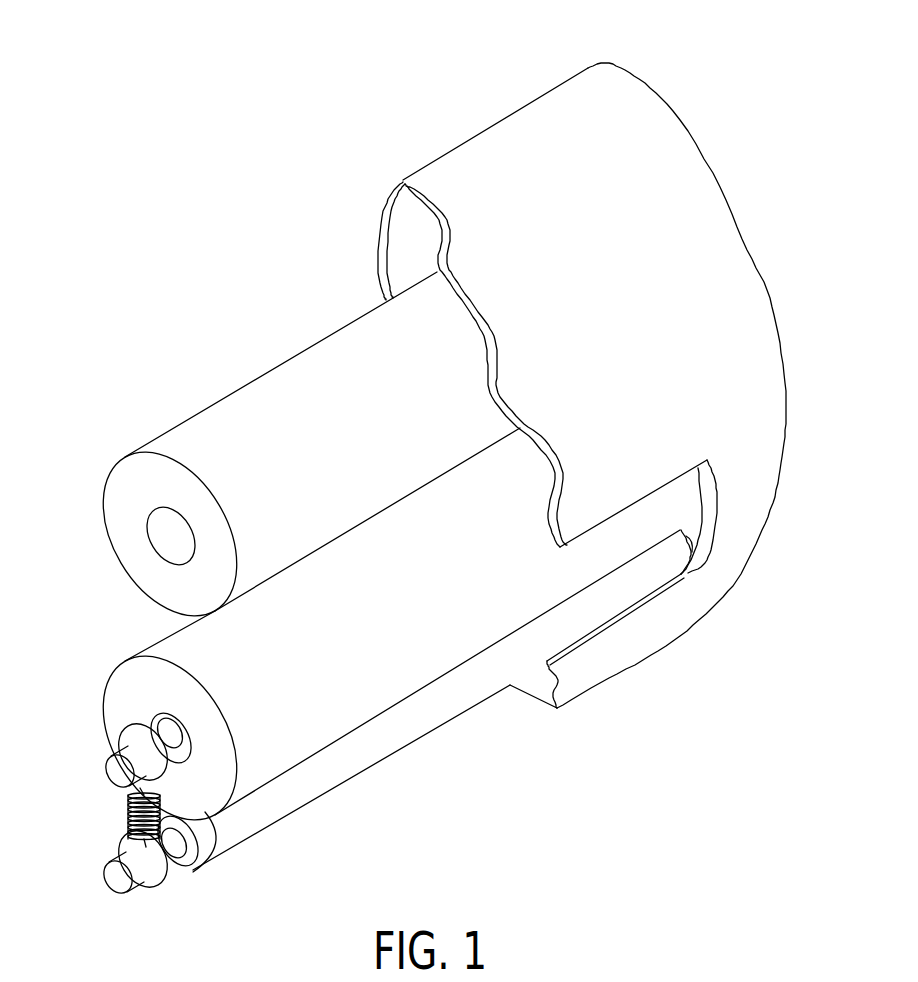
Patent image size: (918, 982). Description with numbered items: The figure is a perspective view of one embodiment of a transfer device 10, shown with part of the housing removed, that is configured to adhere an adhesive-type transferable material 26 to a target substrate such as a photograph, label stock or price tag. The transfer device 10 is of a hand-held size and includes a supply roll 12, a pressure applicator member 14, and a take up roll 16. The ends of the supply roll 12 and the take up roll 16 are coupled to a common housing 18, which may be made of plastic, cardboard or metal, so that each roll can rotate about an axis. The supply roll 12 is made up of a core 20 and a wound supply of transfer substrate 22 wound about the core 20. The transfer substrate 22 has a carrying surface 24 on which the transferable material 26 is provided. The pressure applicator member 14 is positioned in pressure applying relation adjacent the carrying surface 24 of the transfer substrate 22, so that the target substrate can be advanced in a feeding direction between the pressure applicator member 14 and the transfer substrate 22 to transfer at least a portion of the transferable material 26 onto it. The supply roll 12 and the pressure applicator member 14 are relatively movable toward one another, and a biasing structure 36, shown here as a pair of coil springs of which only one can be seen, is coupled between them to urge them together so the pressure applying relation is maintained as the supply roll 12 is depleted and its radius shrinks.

The transfer device 10 is at (123, 217).
The supply roll 12 is at (130, 692).
The pressure applicator member 14 is at (185, 862).
The take up roll 16 is at (123, 483).
The housing 18 is at (704, 193).
The core 20 is at (130, 722).
The transfer substrate 22 is at (153, 648).
The carrying surface 24 is at (383, 687).
The transferable material 26 is at (318, 738).
The biasing structure 36 is at (123, 817).